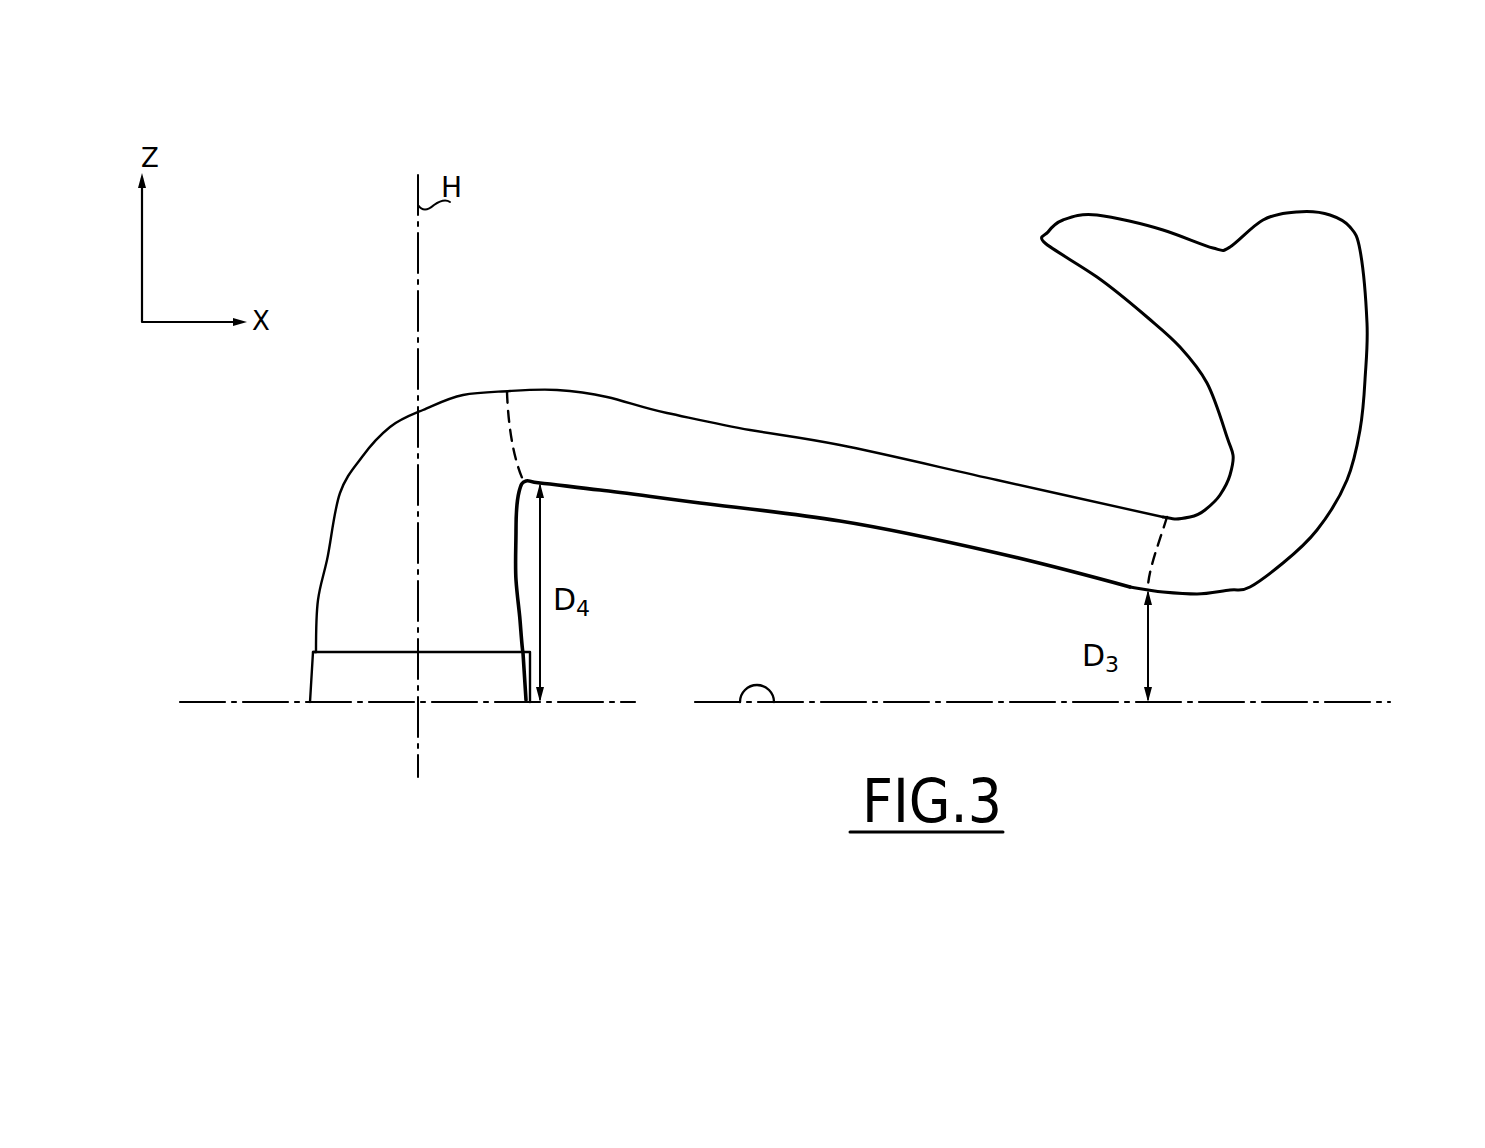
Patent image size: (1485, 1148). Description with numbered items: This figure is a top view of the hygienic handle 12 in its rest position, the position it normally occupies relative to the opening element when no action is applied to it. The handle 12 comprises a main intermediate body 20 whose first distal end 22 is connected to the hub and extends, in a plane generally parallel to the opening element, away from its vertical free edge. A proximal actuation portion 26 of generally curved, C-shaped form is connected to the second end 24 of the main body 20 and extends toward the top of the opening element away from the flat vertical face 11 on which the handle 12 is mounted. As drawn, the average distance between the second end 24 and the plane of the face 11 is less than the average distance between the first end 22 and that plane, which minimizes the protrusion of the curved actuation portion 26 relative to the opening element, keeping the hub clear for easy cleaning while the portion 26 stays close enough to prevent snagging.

The flat vertical face 11 is at (773, 702).
The hygienic handle 12 is at (885, 457).
The main intermediate body 20 is at (890, 457).
The first distal end 22 is at (504, 418).
The second end 24 is at (1153, 555).
The proximal actuation portion 26 is at (1360, 433).